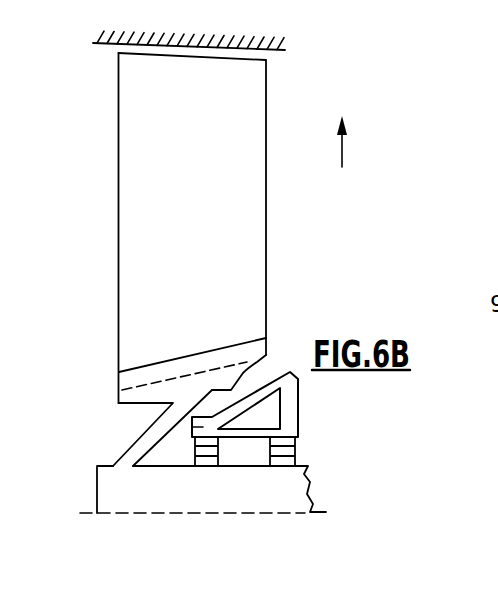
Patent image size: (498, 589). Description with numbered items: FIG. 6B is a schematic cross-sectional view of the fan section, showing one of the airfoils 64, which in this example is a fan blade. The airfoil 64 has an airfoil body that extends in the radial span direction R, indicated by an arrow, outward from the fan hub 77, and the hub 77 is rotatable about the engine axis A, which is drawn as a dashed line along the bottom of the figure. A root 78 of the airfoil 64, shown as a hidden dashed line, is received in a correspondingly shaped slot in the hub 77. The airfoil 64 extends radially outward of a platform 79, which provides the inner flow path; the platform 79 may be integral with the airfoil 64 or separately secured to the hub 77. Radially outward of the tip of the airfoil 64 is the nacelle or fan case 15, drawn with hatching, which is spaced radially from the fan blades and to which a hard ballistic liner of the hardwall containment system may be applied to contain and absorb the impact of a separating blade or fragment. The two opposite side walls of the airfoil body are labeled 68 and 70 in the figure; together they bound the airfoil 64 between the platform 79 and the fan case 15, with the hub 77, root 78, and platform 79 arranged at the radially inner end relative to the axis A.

The fan case 15 is at (98, 43).
The airfoil 64 is at (290, 247).
The first side wall 68 is at (118, 200).
The second side wall 70 is at (266, 168).
The fan hub 77 is at (137, 452).
The root 78 is at (117, 379).
The platform 79 is at (140, 365).
The engine axis A is at (330, 512).
The radial span direction R is at (342, 145).